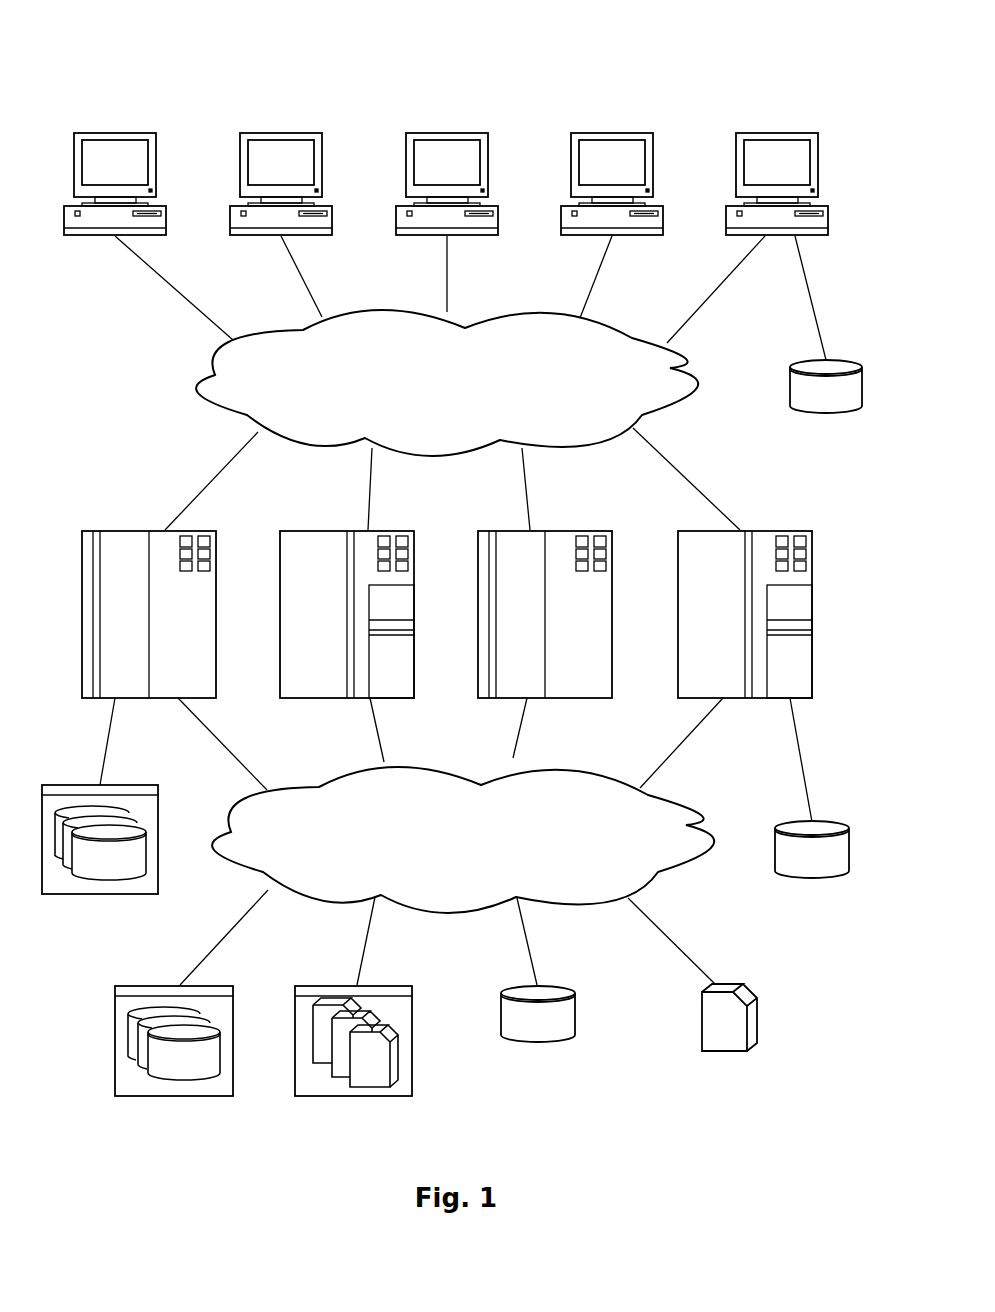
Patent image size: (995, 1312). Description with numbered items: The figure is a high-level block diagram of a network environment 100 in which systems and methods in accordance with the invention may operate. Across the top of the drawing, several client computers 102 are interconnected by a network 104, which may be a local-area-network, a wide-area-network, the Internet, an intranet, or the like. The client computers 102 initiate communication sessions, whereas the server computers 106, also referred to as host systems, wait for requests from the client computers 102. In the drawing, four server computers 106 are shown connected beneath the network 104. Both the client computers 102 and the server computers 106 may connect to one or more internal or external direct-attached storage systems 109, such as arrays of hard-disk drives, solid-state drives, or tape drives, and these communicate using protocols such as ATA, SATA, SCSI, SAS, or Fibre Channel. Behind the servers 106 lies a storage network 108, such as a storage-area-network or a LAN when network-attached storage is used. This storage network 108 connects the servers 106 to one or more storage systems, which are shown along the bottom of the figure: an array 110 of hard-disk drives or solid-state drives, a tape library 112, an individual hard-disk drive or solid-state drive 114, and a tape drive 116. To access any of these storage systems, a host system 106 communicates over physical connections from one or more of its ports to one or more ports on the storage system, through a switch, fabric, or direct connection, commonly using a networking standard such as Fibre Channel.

The network environment 100 is at (186, 68).
The client computer 102 is at (100, 173).
The network 104 is at (582, 394).
The server computer 106 is at (109, 620).
The storage network 108 is at (563, 851).
The direct-attached storage system 109 is at (110, 943).
The array of hard-disk drives or solid-state drives 110 is at (175, 1097).
The tape library 112 is at (355, 1097).
The individual hard-disk drive or solid-state drive 114 is at (535, 1044).
The tape drive 116 is at (723, 1052).